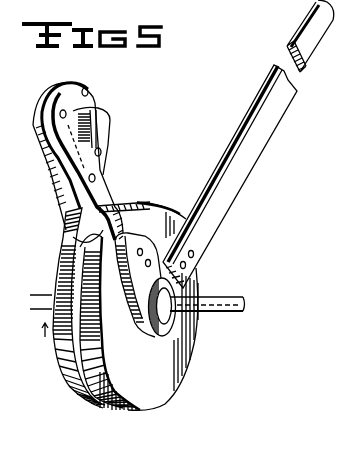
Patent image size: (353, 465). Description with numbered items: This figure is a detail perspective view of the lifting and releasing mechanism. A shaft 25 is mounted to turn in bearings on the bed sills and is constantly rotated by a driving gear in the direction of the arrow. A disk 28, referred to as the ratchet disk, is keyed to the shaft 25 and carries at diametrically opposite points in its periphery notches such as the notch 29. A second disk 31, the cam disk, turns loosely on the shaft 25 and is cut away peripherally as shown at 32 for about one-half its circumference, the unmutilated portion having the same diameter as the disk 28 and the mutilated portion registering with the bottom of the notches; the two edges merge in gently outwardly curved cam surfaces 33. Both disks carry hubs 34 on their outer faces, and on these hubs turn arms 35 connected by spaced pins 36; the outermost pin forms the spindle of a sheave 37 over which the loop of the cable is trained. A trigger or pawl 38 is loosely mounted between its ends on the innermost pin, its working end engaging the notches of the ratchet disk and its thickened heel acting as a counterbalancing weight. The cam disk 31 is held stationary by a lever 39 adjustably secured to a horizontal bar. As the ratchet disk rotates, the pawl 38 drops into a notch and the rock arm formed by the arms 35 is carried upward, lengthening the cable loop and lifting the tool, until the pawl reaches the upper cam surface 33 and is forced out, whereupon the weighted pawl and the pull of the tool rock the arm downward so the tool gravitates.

The shaft 25 is at (233, 300).
The disk 28 is at (53, 344).
The notch 29 is at (63, 237).
The second disk 31 is at (193, 340).
The cut away portion 32 is at (95, 318).
The cam surfaces 33 is at (139, 205).
The hubs 34 is at (163, 322).
The arms 35 is at (57, 167).
The pins 36 is at (68, 112).
The sheave 37 is at (53, 87).
The trigger or pawl 38 is at (110, 120).
The lever 39 is at (262, 141).